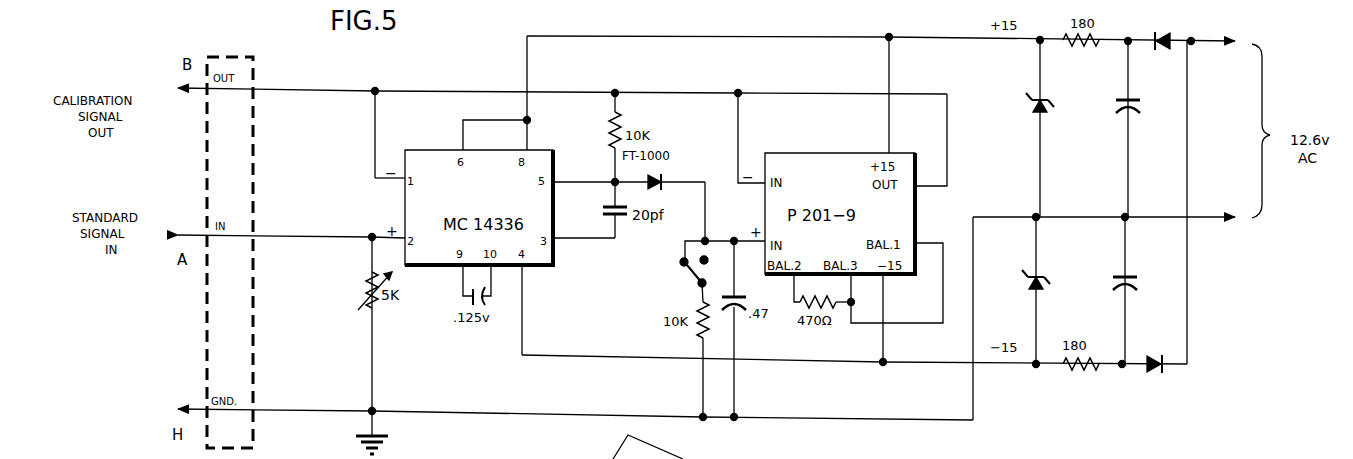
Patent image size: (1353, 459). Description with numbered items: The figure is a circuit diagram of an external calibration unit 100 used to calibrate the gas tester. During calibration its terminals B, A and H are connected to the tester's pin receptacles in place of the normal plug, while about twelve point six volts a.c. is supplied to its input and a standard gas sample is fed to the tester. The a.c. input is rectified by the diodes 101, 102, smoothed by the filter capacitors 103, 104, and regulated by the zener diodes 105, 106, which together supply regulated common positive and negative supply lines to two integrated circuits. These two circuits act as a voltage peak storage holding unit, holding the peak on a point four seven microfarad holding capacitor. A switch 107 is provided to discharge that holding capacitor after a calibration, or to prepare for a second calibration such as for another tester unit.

The external calibration unit 100 is at (318, 252).
The diode 101 is at (1163, 51).
The diode 102 is at (1141, 372).
The capacitor 103 is at (1141, 104).
The capacitor 104 is at (1133, 284).
The zener diode 105 is at (1033, 108).
The zener diode 106 is at (1029, 283).
The switch 107 is at (691, 278).